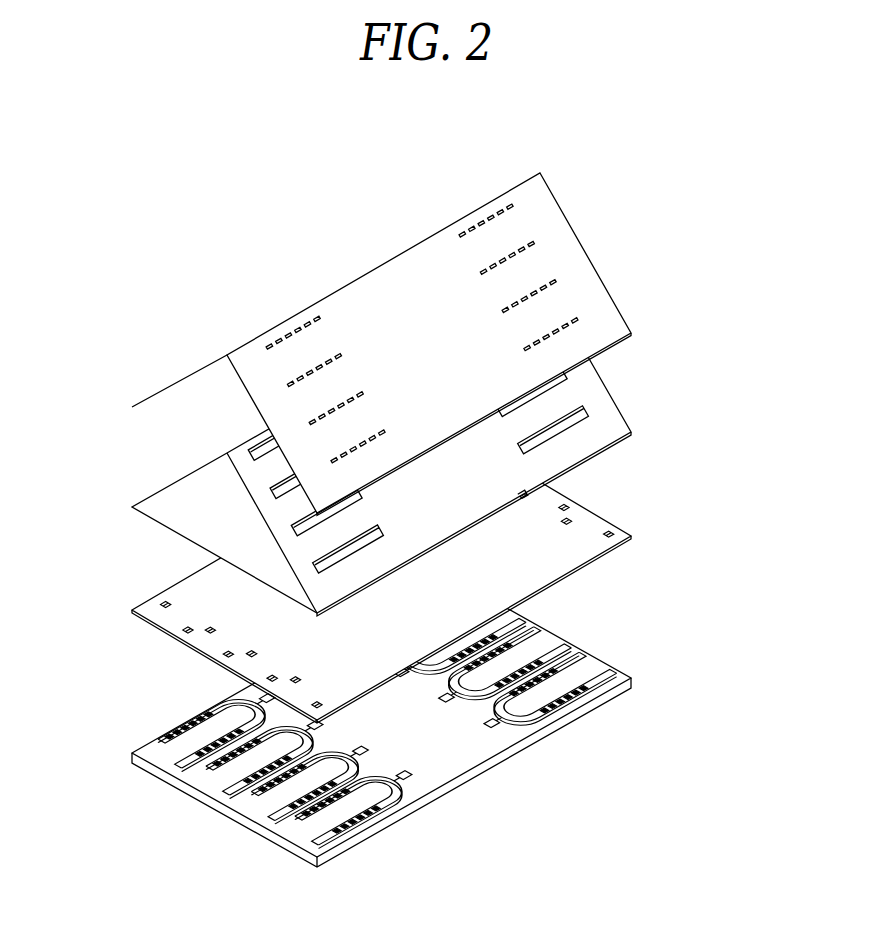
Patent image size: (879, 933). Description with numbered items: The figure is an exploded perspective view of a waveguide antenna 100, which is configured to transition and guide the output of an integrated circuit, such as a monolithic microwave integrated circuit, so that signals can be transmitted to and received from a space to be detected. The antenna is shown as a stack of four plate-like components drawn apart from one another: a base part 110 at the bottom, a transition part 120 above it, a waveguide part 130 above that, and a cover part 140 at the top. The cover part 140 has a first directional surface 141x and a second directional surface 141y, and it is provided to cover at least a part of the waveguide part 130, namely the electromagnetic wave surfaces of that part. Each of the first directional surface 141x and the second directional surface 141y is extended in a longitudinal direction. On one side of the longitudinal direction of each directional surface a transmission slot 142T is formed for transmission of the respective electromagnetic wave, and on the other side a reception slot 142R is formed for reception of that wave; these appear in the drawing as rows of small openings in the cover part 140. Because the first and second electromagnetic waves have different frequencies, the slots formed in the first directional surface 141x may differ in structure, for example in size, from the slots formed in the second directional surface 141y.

The waveguide antenna 100 is at (235, 188).
The base part 110 is at (520, 770).
The transition part 120 is at (618, 517).
The waveguide part 130 is at (632, 400).
The cover part 140 is at (587, 231).
The first directional surface 141x is at (413, 287).
The second directional surface 141y is at (367, 266).
The transmission slot 142T is at (264, 334).
The reception slot 142R is at (590, 326).